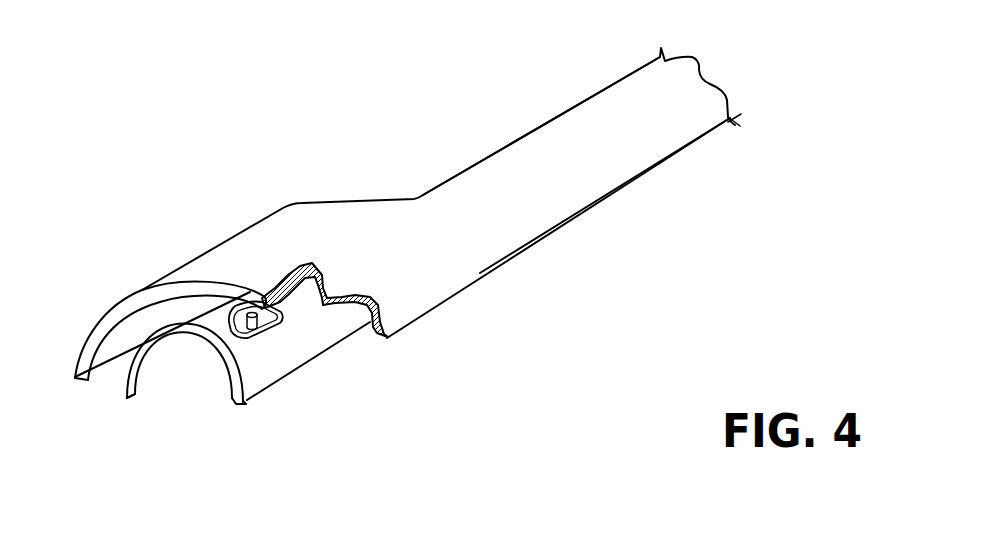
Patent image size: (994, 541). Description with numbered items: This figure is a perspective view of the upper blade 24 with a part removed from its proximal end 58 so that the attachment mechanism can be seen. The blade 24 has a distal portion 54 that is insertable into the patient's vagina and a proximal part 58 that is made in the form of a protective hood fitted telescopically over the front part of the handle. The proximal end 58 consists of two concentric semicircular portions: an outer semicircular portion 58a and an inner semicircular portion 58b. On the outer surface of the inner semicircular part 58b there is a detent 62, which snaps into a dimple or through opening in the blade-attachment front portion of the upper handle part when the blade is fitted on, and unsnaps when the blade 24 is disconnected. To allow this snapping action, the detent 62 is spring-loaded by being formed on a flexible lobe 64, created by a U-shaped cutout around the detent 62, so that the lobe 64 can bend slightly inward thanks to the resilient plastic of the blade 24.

The upper blade 24 is at (546, 89).
The distal portion of the blade 54 is at (355, 190).
The proximal part of the blade 58 is at (339, 538).
The outer semicircular portion 58a is at (70, 394).
The inner semicircular portion 58b is at (143, 398).
The detent 62 is at (240, 309).
The flexible lobe 64 is at (284, 330).